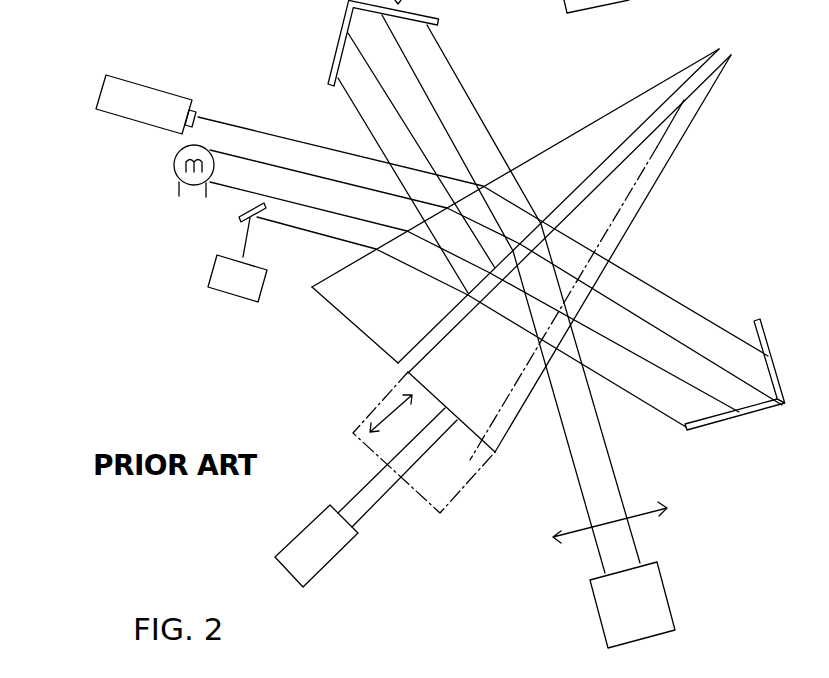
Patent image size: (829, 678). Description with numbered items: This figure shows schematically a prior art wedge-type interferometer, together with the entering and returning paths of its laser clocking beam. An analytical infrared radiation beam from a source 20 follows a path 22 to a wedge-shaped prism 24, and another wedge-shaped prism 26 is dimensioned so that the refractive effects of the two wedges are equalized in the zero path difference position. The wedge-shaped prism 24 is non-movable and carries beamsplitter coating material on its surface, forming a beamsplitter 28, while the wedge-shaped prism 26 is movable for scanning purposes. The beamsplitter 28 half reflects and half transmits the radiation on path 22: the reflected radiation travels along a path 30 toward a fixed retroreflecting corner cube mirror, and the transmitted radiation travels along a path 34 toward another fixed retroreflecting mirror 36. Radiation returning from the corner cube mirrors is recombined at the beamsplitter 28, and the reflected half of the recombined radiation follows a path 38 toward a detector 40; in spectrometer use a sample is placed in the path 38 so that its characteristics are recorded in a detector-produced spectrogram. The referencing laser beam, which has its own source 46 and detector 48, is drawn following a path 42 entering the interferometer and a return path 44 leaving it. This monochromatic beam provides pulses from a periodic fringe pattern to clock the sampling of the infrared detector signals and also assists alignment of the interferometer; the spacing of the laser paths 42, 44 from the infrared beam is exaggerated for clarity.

The source 20 is at (174, 162).
The path 22 is at (352, 214).
The wedge-shaped prism 24 is at (362, 338).
The wedge-shaped prism 26 is at (643, 223).
The beamsplitter 28 is at (500, 267).
The path 30 is at (465, 157).
The path 34 is at (661, 360).
The retroreflecting mirror 36 is at (714, 440).
The path 38 is at (603, 458).
The detector 40 is at (673, 588).
The path 42 is at (221, 124).
The return path 44 is at (372, 132).
The source 46 is at (97, 99).
The detector 48 is at (213, 277).